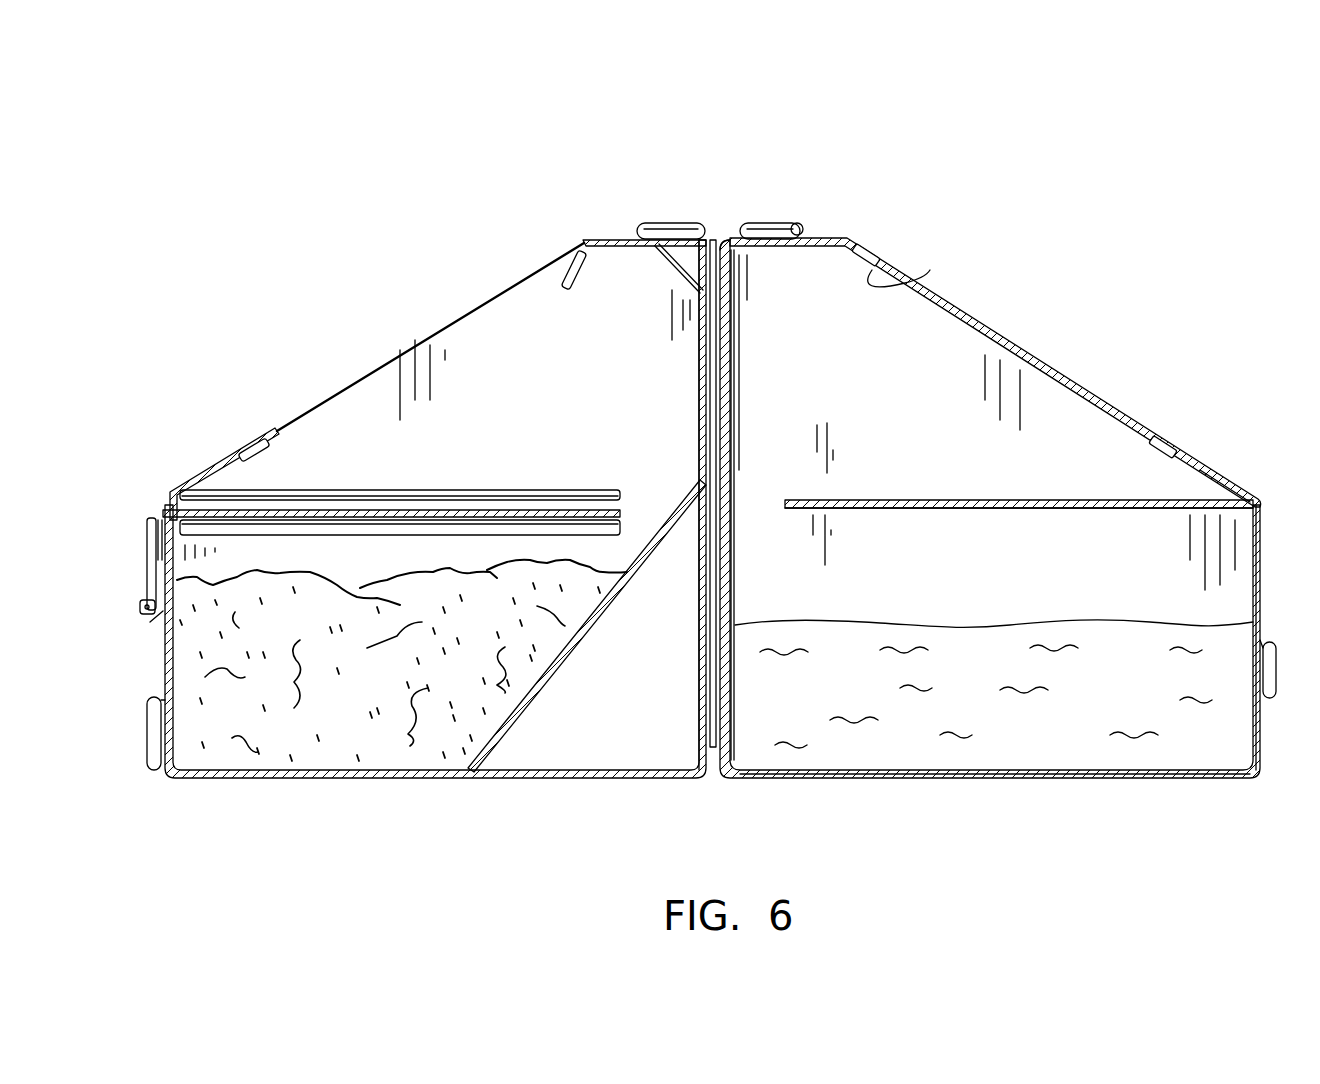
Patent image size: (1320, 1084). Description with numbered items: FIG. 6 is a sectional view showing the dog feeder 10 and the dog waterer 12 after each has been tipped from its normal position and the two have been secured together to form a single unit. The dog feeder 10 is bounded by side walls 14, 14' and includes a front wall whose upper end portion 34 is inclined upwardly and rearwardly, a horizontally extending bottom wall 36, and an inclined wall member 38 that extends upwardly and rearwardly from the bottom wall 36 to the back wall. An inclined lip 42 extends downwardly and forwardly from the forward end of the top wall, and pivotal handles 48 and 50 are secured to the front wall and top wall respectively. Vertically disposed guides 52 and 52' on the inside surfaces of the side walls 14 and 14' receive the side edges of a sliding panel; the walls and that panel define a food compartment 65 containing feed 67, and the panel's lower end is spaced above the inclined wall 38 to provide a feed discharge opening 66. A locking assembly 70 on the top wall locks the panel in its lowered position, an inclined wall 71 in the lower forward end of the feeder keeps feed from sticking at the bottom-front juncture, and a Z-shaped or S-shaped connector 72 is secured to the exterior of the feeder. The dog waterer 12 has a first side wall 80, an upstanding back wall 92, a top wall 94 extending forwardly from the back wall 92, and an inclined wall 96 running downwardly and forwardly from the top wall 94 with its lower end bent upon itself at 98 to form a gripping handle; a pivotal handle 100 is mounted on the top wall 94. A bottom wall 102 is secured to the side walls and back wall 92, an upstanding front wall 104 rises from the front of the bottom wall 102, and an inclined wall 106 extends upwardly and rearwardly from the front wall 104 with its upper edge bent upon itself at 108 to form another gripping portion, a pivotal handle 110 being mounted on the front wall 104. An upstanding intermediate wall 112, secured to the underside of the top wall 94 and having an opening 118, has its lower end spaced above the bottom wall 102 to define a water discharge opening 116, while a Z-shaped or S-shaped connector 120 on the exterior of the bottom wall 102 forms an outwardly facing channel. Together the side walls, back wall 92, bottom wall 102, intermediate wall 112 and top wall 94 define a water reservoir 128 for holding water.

The dog feeder 10 is at (415, 300).
The dog waterer 12 is at (1045, 330).
The second side wall 14' is at (435, 509).
The side wall 14 is at (435, 509).
The inclined upper end portion 34 is at (205, 455).
The bottom wall 36 is at (699, 380).
The inclined wall member 38 is at (570, 653).
The inclined lip 42 is at (588, 252).
The pivotal handle 48 is at (660, 222).
The pivotal handle 50 is at (148, 780).
The guide 52' is at (391, 461).
The guide 52 is at (391, 461).
The food compartment 65 is at (375, 556).
The feed discharge opening 66 is at (650, 515).
The feed 67 is at (360, 712).
The locking assembly 70 is at (137, 546).
The inclined wall 71 is at (700, 230).
The Z-shaped or S-shaped connector 72 is at (705, 423).
The first side wall 80 is at (1060, 425).
The back wall 92 is at (1000, 778).
The top wall 94 is at (1262, 562).
The inclined wall 96 is at (1210, 470).
The bent lower end 98 is at (1163, 453).
The pivotal handle 100 is at (1275, 702).
The bottom wall 102 is at (735, 362).
The front wall 104 is at (833, 237).
The inclined wall 106 is at (862, 246).
The bent upper edge 108 is at (865, 288).
The pivotal handle 110 is at (758, 222).
The intermediate wall 112 is at (924, 501).
The water discharge opening 116 is at (758, 510).
The opening 118 is at (848, 508).
The Z-shaped or S-shaped connector 120 is at (730, 323).
The water reservoir 128 is at (1195, 548).